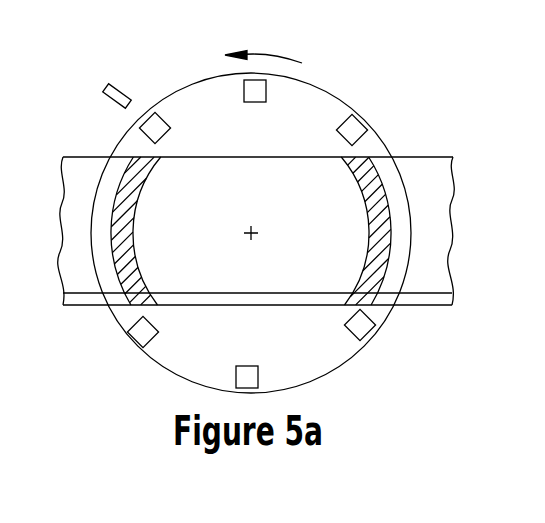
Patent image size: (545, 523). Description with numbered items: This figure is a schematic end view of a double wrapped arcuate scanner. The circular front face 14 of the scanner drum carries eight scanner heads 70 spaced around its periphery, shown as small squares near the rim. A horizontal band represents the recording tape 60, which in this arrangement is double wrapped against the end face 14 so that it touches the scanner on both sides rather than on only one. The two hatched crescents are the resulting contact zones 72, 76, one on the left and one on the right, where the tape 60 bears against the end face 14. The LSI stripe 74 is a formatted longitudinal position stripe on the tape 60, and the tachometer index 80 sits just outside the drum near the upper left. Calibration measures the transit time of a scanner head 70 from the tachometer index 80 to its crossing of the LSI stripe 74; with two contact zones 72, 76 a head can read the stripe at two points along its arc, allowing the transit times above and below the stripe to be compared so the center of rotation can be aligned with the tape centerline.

The front face 14 is at (330, 90).
The recording tape 60 is at (425, 306).
The scanner heads 70 is at (365, 120).
The contact zone 72 is at (140, 248).
The LSI stripe 74 is at (445, 293).
The contact zone 76 is at (369, 192).
The tachometer index 80 is at (107, 98).